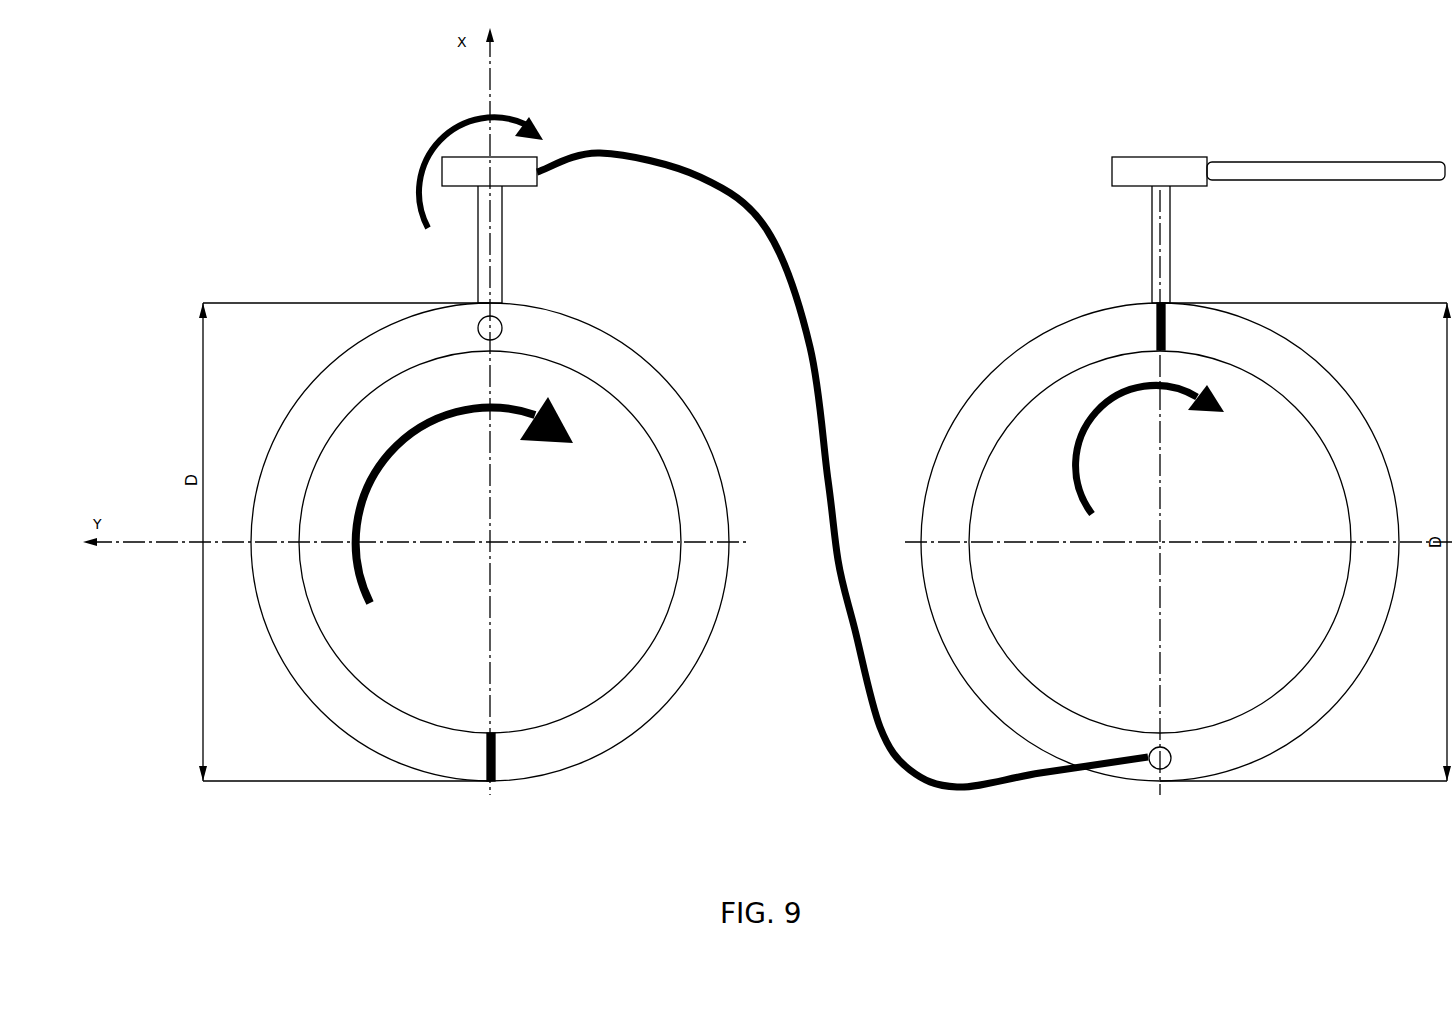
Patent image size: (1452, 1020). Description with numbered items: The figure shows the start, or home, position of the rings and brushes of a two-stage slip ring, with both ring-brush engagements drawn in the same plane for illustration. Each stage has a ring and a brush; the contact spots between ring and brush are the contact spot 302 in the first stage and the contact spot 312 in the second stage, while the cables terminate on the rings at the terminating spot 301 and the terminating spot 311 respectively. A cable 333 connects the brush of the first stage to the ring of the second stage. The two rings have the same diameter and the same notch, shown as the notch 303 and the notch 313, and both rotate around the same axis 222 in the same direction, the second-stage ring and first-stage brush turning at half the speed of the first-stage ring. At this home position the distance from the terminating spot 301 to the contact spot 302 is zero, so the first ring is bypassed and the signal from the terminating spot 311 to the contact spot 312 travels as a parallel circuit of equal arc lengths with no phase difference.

The axis 222 is at (490, 542).
The terminating spot 301 is at (470, 318).
The contact spot 302 is at (498, 297).
The notch 303 is at (497, 783).
The terminating spot 311 is at (1167, 767).
The contact spot 312 is at (1153, 293).
The notch 313 is at (1167, 333).
The cable 333 is at (762, 228).